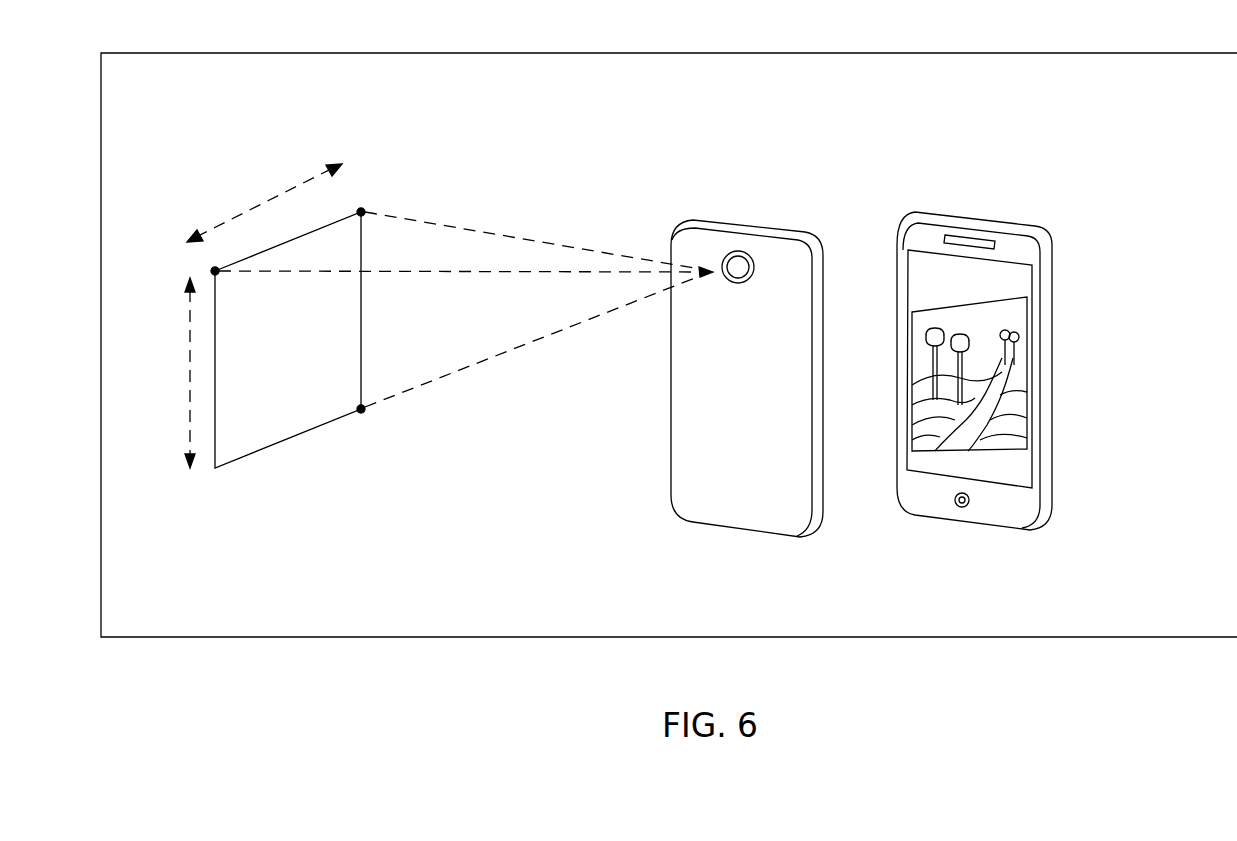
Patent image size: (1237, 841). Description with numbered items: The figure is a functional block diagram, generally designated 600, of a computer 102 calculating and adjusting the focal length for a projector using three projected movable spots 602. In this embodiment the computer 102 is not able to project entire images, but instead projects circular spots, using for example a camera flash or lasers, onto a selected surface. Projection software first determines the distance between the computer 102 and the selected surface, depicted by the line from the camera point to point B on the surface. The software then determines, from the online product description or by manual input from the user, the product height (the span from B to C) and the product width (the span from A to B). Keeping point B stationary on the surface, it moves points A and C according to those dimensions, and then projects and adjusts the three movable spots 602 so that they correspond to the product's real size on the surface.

The example embodiment 600 is at (1037, 53).
The three movable spots 602 is at (283, 440).
The computer 102 is at (967, 524).